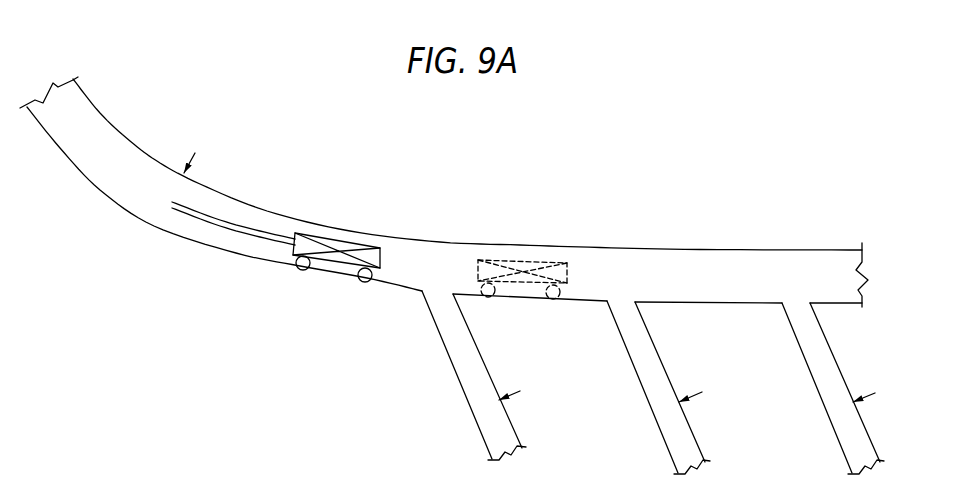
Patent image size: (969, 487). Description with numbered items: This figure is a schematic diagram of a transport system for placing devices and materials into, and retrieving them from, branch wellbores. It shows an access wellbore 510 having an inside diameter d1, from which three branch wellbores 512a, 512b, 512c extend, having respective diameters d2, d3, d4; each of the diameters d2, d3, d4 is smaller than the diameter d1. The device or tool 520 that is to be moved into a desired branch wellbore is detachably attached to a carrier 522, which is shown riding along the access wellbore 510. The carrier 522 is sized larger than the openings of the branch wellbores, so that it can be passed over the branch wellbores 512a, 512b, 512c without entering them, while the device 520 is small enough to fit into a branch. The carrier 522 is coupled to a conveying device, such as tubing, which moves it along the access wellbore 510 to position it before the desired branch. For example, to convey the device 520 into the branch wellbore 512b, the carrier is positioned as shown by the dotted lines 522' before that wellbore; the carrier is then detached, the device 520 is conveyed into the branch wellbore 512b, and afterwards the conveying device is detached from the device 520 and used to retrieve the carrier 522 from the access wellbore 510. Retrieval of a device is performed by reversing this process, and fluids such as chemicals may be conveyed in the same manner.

The access wellbore 510 is at (110, 121).
The device or tool 520 is at (320, 233).
The carrier 522 is at (345, 229).
The carrier in dotted-line position 522' is at (535, 246).
The branch wellbore 512a is at (442, 340).
The branch wellbore 512b is at (623, 340).
The branch wellbore 512c is at (796, 340).
The inside diameter of access wellbore d1 is at (153, 227).
The diameter of branch wellbore 512a d2 is at (473, 413).
The diameter of branch wellbore 512b d3 is at (654, 415).
The diameter of branch wellbore 512c d4 is at (828, 414).